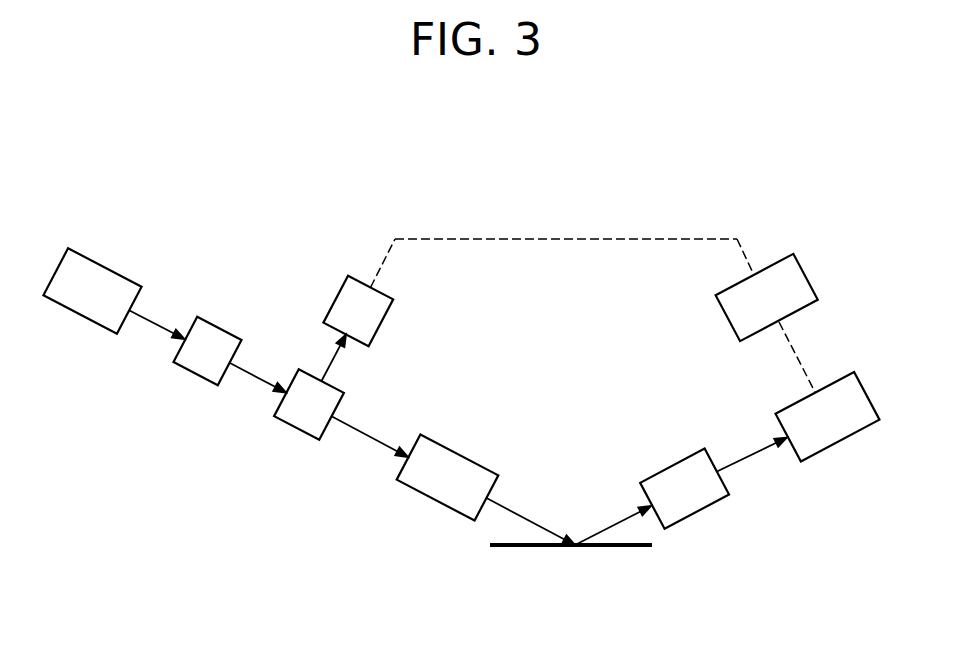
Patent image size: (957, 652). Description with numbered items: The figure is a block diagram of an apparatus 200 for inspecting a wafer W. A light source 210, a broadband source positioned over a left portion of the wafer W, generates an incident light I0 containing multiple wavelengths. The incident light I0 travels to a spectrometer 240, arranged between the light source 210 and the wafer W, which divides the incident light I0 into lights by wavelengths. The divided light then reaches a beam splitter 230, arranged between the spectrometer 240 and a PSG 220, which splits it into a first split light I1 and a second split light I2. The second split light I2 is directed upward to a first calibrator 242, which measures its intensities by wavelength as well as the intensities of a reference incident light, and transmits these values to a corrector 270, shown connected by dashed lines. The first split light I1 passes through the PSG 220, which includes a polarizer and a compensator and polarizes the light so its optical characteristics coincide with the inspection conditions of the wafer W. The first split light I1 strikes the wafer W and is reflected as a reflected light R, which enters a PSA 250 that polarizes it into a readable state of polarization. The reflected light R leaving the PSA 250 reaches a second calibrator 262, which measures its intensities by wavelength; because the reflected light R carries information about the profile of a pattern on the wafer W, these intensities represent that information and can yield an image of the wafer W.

The apparatus for inspecting a wafer 200 is at (561, 209).
The light source 210 is at (80, 316).
The PSG 220 is at (425, 501).
The beam splitter 230 is at (293, 431).
The spectrometer 240 is at (195, 376).
The first calibrator 242 is at (338, 292).
The PSA 250 is at (717, 504).
The second calibrator 262 is at (825, 451).
The corrector 270 is at (722, 313).
The incident light I0 is at (145, 323).
The first split light I1 is at (368, 442).
The second split light I2 is at (332, 364).
The reflected light R is at (611, 524).
The wafer W is at (605, 549).